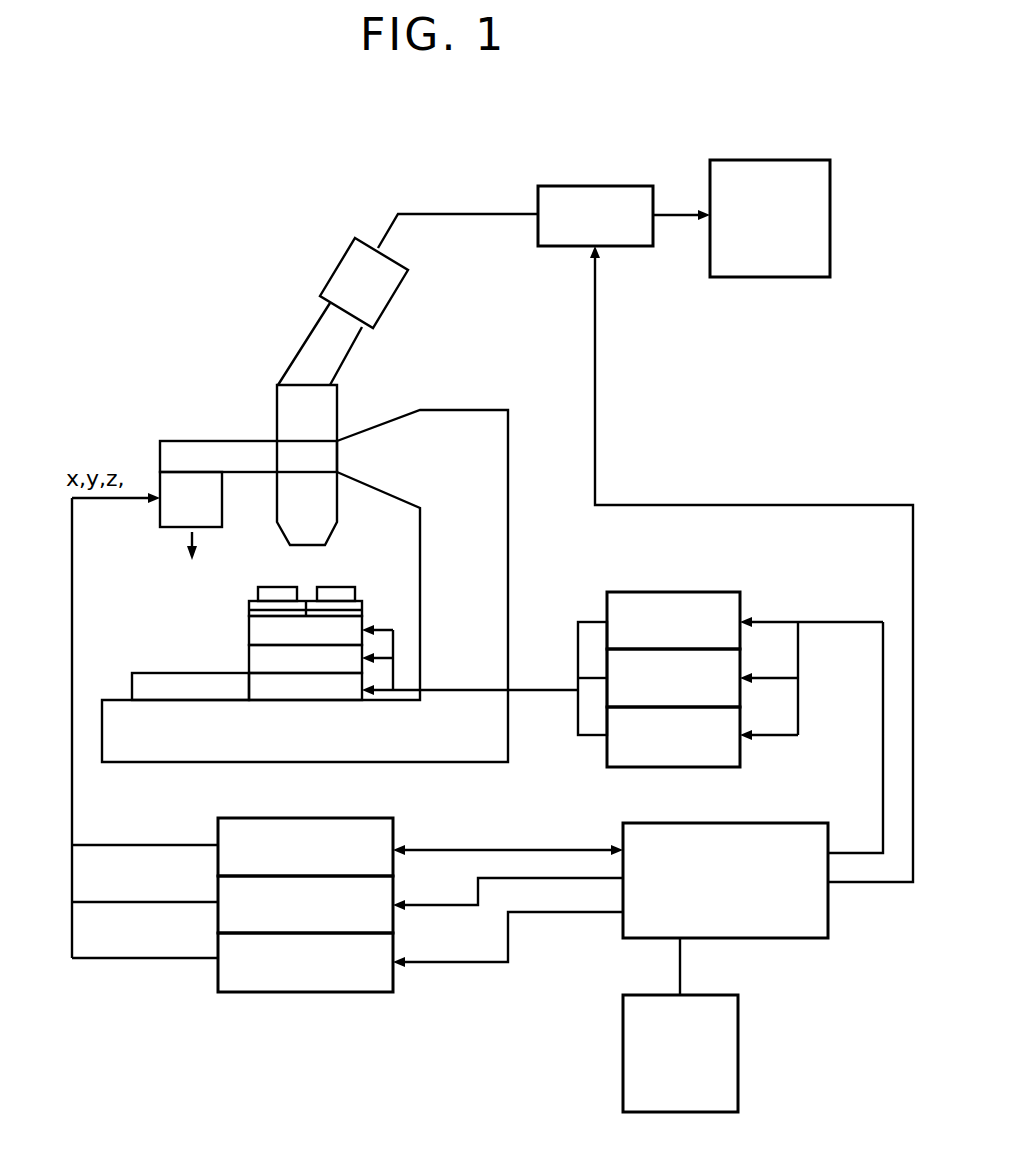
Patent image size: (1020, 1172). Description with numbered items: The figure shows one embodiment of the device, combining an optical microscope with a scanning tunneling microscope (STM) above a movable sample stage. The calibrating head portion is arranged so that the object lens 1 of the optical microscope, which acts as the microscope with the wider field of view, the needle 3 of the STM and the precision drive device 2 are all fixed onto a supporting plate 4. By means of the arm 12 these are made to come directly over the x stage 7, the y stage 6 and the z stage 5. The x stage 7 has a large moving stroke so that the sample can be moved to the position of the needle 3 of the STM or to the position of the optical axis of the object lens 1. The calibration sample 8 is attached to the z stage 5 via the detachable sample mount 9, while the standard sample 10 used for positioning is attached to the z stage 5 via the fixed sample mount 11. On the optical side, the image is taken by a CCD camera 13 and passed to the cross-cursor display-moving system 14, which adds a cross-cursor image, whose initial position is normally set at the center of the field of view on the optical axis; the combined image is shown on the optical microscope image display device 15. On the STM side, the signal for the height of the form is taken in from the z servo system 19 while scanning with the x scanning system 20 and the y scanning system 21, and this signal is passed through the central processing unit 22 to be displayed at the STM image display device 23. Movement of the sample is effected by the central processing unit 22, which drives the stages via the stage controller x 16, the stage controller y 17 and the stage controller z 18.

The object lens 1 is at (330, 510).
The precision drive device 2 is at (160, 490).
The needle 3 is at (178, 545).
The supporting plate 4 is at (222, 443).
The z stage 5 is at (249, 630).
The y stage 6 is at (249, 660).
The x stage 7 is at (172, 678).
The calibration sample 8 is at (272, 587).
The detachable sample mount 9 is at (249, 604).
The standard sample 10 is at (330, 588).
The fixed sample mount 11 is at (365, 609).
The arm 12 is at (455, 418).
The CCD camera 13 is at (338, 273).
The cross-cursor display-moving system 14 is at (598, 188).
The optical microscope image display device 15 is at (776, 160).
The stage controller x 16 is at (607, 607).
The stage controller y 17 is at (607, 668).
The stage controller z 18 is at (607, 750).
The z servo system 19 is at (218, 832).
The x scanning system 20 is at (218, 890).
The y scanning system 21 is at (218, 948).
The central processing unit 22 is at (757, 833).
The STM image display device 23 is at (625, 1050).